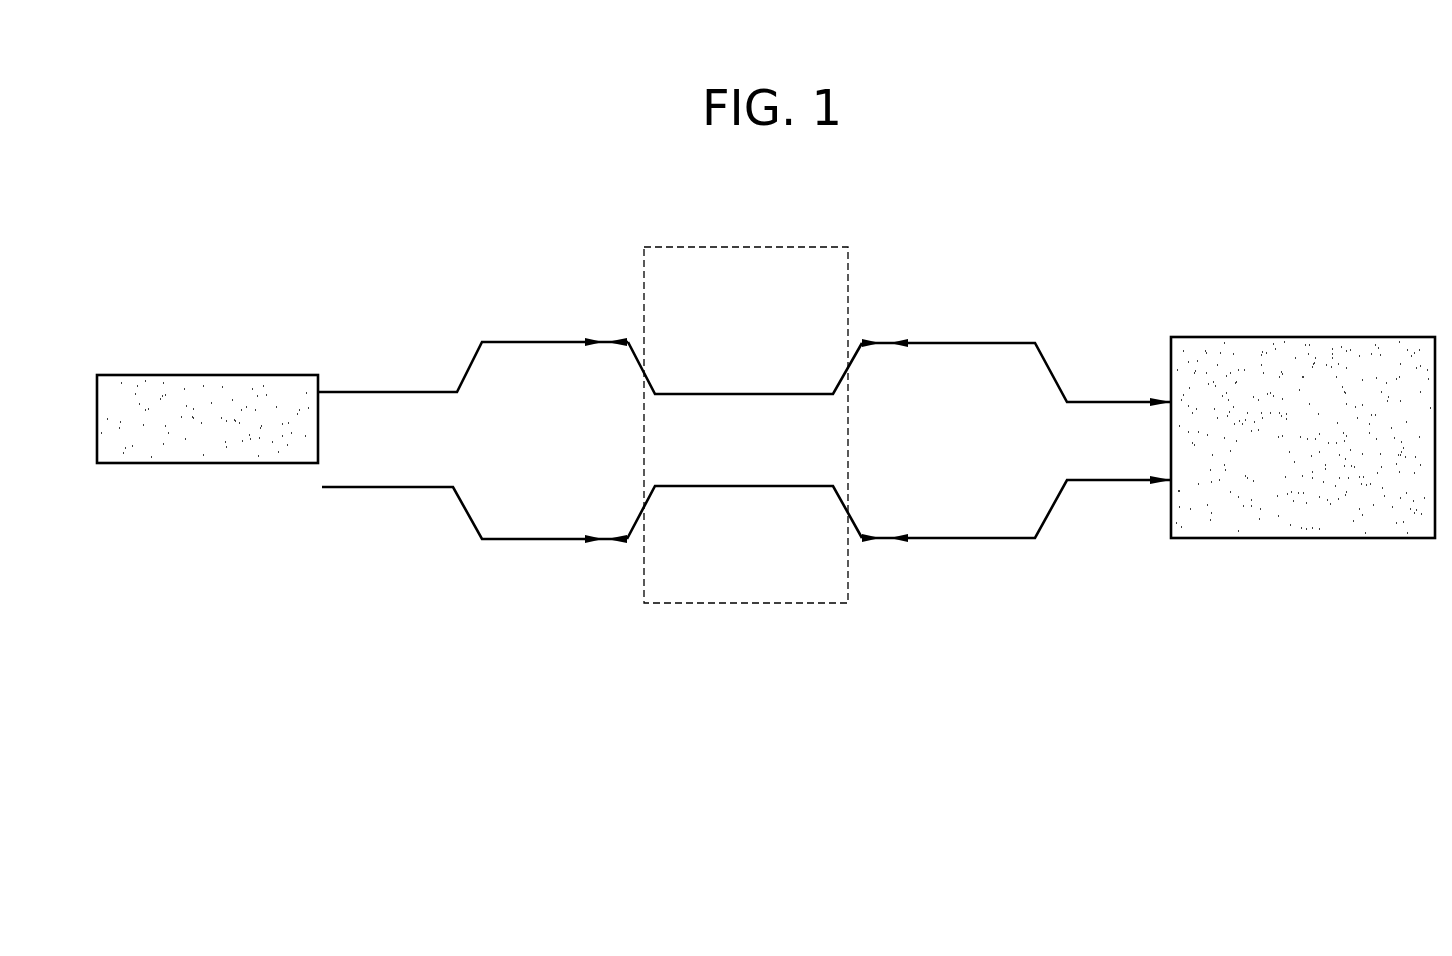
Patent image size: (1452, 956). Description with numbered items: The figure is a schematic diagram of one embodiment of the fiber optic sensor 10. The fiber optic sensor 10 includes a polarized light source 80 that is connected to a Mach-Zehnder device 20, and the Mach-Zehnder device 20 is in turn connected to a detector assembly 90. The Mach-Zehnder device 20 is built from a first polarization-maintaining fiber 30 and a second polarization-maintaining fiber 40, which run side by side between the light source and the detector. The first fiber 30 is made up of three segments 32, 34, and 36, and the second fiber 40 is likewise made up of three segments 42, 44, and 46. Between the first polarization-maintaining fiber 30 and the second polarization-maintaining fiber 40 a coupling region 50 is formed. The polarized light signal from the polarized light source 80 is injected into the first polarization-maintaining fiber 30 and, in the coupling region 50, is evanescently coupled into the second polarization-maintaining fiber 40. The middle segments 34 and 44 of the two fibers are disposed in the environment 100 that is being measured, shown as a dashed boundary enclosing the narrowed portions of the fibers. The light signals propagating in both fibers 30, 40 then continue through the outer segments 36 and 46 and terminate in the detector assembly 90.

The fiber optic sensor 10 is at (1120, 168).
The Mach-Zehnder device 20 is at (914, 203).
The first polarization-maintaining fiber 30 is at (532, 228).
The segment 32 is at (557, 342).
The segment 34 is at (687, 394).
The segment 36 is at (957, 343).
The second polarization-maintaining fiber 40 is at (529, 640).
The segment 42 is at (382, 487).
The segment 44 is at (687, 486).
The segment 46 is at (982, 537).
The coupling region 50 is at (742, 442).
The polarized light source 80 is at (165, 463).
The detector assembly 90 is at (1295, 337).
The environment 100 is at (715, 247).